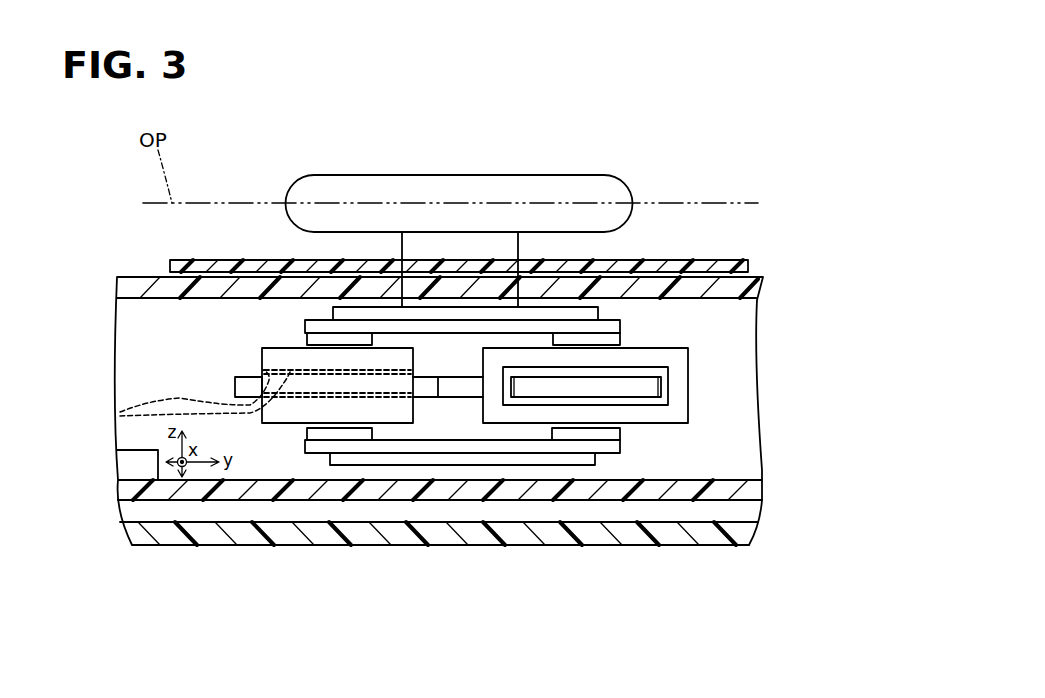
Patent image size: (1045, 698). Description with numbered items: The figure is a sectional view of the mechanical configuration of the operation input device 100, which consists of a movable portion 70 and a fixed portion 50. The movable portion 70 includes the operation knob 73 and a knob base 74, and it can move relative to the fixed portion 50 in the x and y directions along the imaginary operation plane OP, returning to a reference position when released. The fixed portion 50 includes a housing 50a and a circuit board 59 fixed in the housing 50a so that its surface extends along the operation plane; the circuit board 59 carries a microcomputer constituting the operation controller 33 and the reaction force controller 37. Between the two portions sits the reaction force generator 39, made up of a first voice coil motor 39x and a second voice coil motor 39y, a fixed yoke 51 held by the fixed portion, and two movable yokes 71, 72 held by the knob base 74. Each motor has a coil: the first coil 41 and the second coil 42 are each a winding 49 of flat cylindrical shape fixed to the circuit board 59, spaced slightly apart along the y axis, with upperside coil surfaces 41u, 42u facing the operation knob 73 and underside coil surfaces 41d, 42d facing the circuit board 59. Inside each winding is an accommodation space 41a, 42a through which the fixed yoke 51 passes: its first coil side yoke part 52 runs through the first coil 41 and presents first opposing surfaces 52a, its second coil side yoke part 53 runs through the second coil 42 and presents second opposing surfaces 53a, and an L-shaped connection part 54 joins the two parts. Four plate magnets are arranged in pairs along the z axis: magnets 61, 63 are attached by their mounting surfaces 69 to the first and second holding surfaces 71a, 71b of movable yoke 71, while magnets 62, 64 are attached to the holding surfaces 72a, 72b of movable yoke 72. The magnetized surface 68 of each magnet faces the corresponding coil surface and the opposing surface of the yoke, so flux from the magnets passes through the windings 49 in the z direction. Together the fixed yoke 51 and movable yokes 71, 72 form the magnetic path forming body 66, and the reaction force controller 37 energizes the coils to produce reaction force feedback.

The operation input device 100 is at (647, 162).
The operation knob 73 is at (636, 190).
The movable portion 70 is at (470, 233).
The knob base 74 is at (500, 307).
The movable yoke 71 is at (313, 262).
The first holding surface 71a is at (648, 315).
The second holding surface 71b is at (307, 340).
The movable yoke 72 is at (405, 455).
The first holding surface 72a is at (617, 433).
The second holding surface 72b is at (305, 433).
The magnetic path forming body 66 is at (427, 375).
The fixed yoke 51 is at (235, 388).
The magnet 64 is at (372, 453).
The magnet 63 is at (356, 333).
The magnet 61 is at (556, 368).
The magnet 62 is at (584, 432).
The magnetized surface 68 is at (365, 436).
The mounting surface 69 is at (323, 320).
The second coil 42 is at (262, 360).
The accommodation space 42a is at (382, 373).
The coil surface 42u is at (288, 348).
The coil surface 42d is at (265, 448).
The first coil 41 is at (688, 363).
The accommodation space 41a is at (585, 348).
The coil surface 41u is at (651, 348).
The coil surface 41d is at (682, 423).
The winding 49 is at (440, 360).
The first coil side yoke part 52 is at (650, 387).
The first opposing surface 52a is at (661, 397).
The second coil side yoke part 53 is at (420, 388).
The second opposing surface 53a is at (120, 416).
The connection part 54 is at (457, 377).
The reaction force generator 39 is at (711, 322).
The first voice coil motor 39x is at (632, 275).
The second voice coil motor 39y is at (250, 506).
The fixed portion 50 is at (179, 545).
The housing 50a is at (730, 545).
The circuit board 59 is at (136, 505).
The operation controller 33 is at (157, 450).
The reaction force controller 37 is at (102, 454).